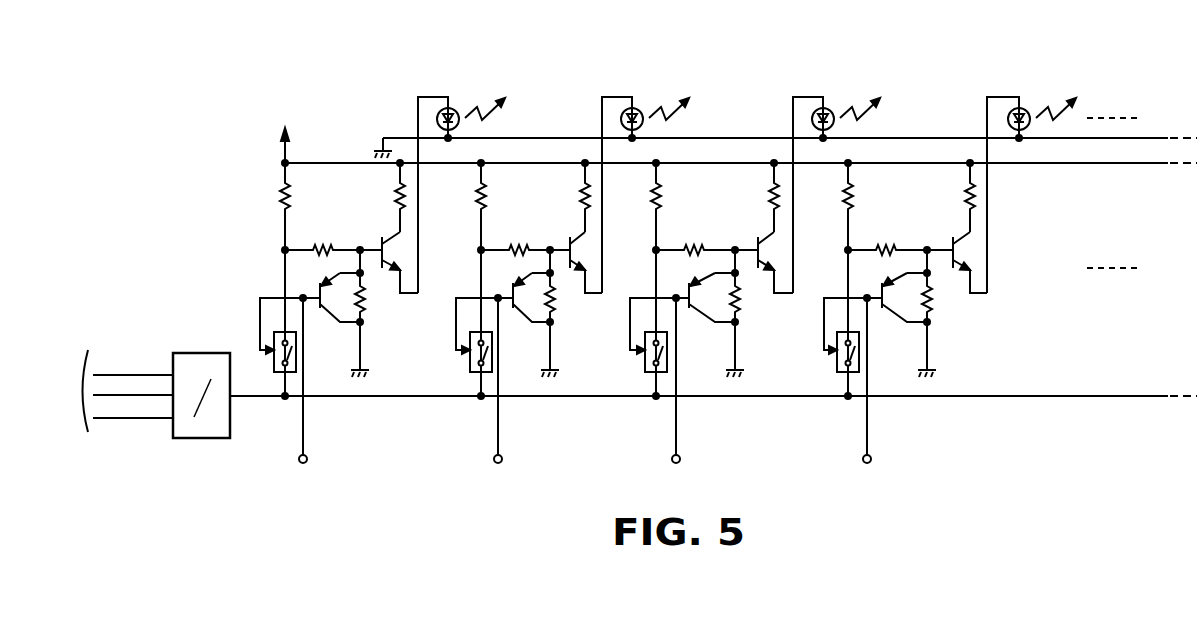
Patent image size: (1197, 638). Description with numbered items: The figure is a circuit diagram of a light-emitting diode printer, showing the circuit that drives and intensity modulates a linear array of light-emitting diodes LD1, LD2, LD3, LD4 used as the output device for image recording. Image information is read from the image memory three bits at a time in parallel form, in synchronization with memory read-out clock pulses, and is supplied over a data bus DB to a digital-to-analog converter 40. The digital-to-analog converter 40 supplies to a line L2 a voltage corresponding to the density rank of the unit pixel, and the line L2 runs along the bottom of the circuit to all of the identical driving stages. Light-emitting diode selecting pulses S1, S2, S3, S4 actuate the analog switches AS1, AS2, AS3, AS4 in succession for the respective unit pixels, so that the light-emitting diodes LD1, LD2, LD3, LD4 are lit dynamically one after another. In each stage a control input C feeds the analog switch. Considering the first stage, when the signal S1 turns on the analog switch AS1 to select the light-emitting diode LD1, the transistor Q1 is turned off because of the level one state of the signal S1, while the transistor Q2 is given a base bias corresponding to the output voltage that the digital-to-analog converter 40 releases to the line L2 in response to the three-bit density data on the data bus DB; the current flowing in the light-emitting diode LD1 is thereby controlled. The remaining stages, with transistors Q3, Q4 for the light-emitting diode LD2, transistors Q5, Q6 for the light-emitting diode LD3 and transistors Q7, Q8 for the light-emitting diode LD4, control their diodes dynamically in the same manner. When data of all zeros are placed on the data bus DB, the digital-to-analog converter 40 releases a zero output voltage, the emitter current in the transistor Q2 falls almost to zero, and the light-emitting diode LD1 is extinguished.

The digital-to-analog converter 40 is at (199, 353).
The data bus DB is at (125, 378).
The light-emitting diode LD1 is at (453, 107).
The light-emitting diode LD2 is at (637, 107).
The light-emitting diode LD3 is at (828, 107).
The light-emitting diode LD4 is at (1024, 107).
The transistor Q1 is at (328, 310).
The transistor Q2 is at (388, 250).
The transistor Q3 is at (521, 310).
The transistor Q4 is at (576, 250).
The transistor Q5 is at (697, 310).
The transistor Q6 is at (764, 250).
The transistor Q7 is at (890, 310).
The transistor Q8 is at (959, 250).
The analog switch AS1 is at (274, 363).
The analog switch AS2 is at (470, 363).
The analog switch AS3 is at (645, 363).
The analog switch AS4 is at (837, 363).
The light-emitting diode selecting pulse S1 is at (307, 459).
The light-emitting diode selecting pulse S2 is at (502, 459).
The light-emitting diode selecting pulse S3 is at (680, 459).
The light-emitting diode selecting pulse S4 is at (871, 459).
The control signal input C is at (552, 319).
The line L2 is at (1066, 397).